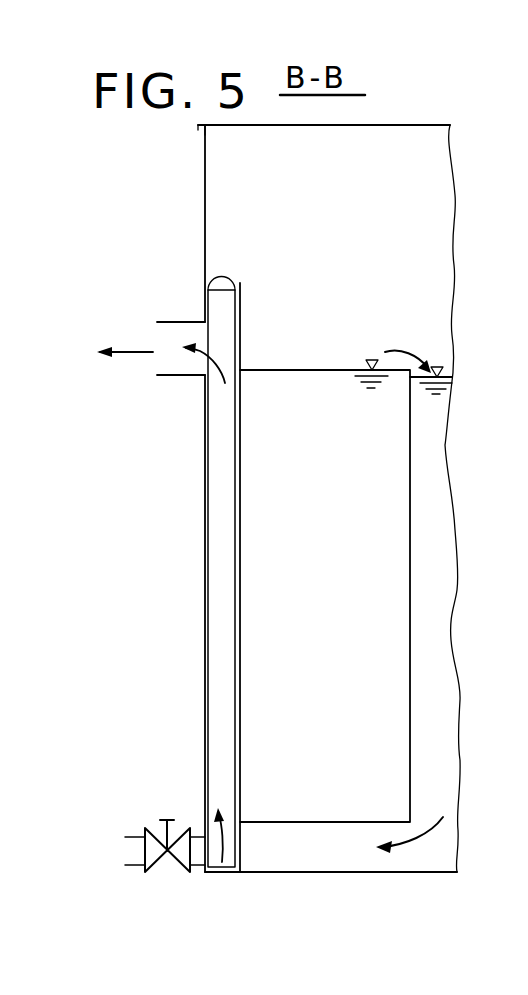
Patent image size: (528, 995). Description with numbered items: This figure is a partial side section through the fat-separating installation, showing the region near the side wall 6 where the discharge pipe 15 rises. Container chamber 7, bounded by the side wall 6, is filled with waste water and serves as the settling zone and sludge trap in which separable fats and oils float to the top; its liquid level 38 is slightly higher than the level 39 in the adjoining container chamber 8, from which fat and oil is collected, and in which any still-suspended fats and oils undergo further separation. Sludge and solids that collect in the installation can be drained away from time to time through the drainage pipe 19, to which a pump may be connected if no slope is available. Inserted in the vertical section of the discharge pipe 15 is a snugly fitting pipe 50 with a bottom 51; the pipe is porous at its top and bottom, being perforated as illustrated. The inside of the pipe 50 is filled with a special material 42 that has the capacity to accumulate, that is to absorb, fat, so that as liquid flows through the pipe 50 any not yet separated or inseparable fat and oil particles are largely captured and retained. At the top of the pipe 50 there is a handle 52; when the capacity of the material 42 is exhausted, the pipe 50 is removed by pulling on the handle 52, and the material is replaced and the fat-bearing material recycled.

The side wall 6 is at (181, 577).
The container chamber 7 is at (300, 654).
The container chamber 8 is at (436, 557).
The discharge pipe 15 is at (182, 375).
The drainage pipe 19 is at (133, 849).
The level 38 is at (372, 358).
The level 39 is at (437, 365).
The special material 42 is at (222, 568).
The pipe 50 is at (203, 450).
The bottom 51 is at (253, 848).
The handle 52 is at (214, 276).